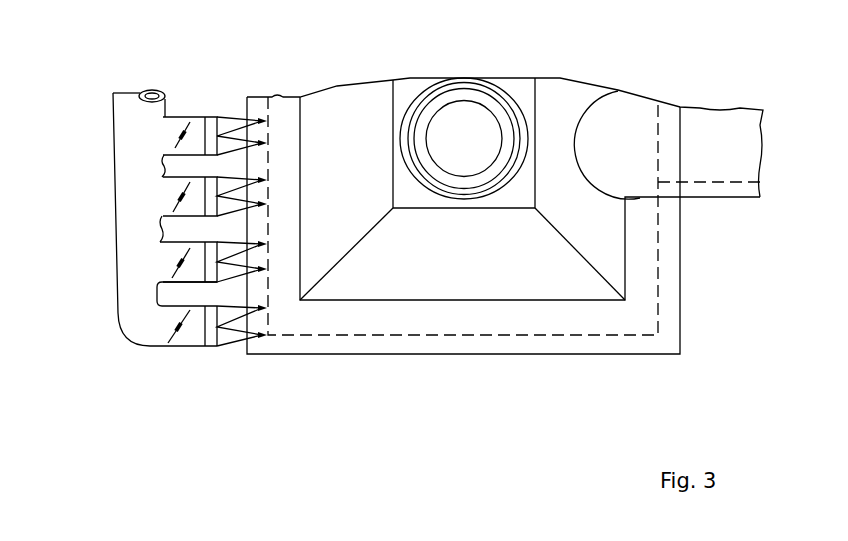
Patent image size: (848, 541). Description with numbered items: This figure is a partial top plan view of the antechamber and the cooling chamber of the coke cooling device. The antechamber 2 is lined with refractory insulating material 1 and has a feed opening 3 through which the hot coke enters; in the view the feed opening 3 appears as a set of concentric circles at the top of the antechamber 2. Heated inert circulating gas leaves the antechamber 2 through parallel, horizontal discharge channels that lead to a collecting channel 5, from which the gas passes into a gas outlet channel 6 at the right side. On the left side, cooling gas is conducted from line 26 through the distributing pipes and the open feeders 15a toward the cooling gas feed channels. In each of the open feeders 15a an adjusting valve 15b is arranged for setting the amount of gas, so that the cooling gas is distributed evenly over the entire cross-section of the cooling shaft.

The refractory insulating material 1 is at (170, 133).
The antechamber 2 is at (463, 95).
The feed opening 3 is at (480, 165).
The collecting channel 5 is at (641, 172).
The gas outlet channel 6 is at (730, 172).
The open feeders 15a is at (196, 117).
The adjusting valve 15b is at (180, 149).
The line 26 is at (141, 172).